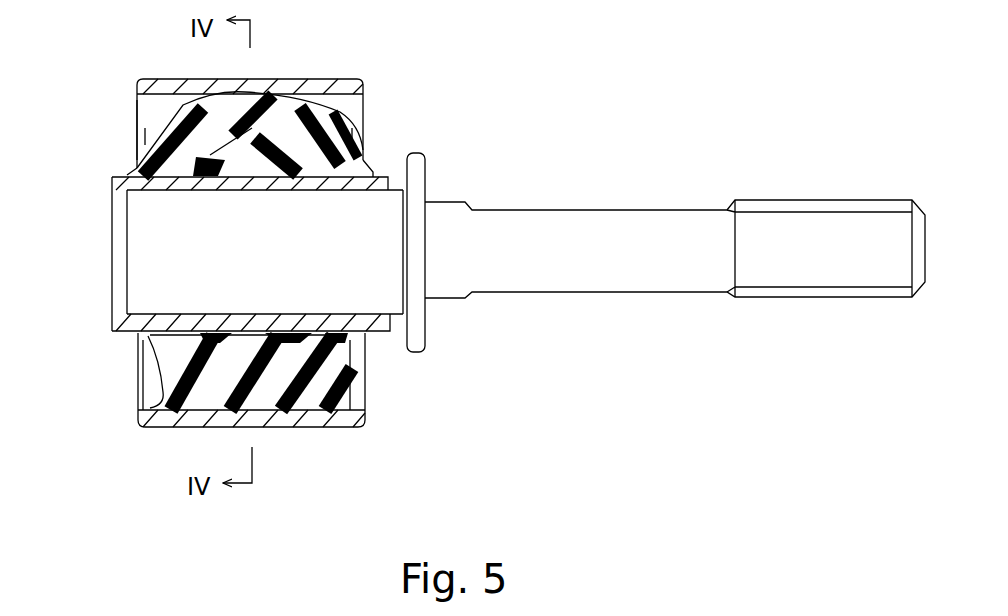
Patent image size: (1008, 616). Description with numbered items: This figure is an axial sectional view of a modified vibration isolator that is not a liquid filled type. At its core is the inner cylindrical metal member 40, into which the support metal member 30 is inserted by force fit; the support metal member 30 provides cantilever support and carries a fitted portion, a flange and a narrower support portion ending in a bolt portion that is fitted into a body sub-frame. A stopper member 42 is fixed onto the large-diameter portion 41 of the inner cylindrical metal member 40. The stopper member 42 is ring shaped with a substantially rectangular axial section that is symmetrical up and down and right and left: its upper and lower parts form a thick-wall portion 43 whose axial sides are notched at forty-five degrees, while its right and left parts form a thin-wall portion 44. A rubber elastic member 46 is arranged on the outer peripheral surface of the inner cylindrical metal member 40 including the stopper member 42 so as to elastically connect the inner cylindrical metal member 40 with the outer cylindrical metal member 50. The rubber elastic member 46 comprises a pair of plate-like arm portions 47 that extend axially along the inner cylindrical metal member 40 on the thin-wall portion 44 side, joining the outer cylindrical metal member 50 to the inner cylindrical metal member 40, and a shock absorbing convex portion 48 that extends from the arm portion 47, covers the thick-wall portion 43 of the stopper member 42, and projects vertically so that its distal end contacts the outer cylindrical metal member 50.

The support metal member 30 is at (582, 206).
The inner cylindrical metal member 40 is at (377, 173).
The large-diameter portion 41 is at (227, 187).
The stopper member 42 is at (271, 130).
The thick-wall portion 43 is at (288, 158).
The thin-wall portion 44 is at (197, 350).
The rubber elastic member 46 is at (170, 119).
The arm portion 47 is at (350, 385).
The shock absorbing convex portion 48 is at (143, 140).
The outer cylindrical metal member 50 is at (337, 80).